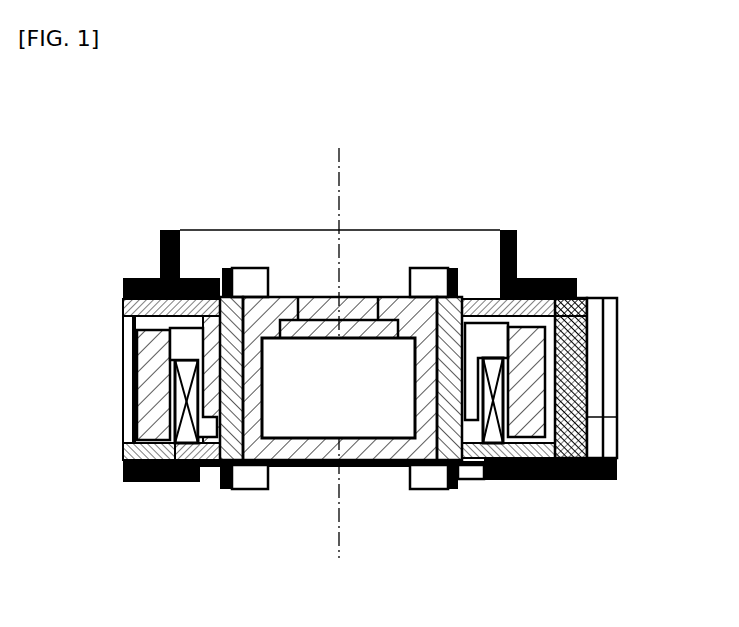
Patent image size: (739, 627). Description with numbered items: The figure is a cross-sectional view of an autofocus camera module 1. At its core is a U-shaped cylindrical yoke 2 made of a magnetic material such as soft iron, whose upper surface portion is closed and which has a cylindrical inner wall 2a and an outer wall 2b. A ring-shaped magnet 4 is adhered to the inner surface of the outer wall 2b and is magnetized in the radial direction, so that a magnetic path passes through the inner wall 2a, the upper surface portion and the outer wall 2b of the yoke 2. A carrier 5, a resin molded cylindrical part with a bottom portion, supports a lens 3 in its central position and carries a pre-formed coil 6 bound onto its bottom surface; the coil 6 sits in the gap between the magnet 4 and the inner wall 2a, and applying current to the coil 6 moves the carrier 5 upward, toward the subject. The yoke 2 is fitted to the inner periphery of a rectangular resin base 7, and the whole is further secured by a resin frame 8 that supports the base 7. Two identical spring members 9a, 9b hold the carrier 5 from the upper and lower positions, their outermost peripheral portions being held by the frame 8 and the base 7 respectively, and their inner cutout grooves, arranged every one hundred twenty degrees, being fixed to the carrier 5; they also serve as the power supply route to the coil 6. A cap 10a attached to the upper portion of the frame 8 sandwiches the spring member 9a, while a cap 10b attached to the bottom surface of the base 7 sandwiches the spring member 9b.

The autofocus camera module 1 is at (462, 218).
The yoke 2 is at (603, 360).
The inner wall 2a is at (153, 278).
The outer wall 2b is at (123, 375).
The lens 3 is at (392, 470).
The magnet 4 is at (553, 272).
The carrier 5 is at (452, 488).
The coil 6 is at (493, 481).
The base 7 is at (603, 437).
The frame 8 is at (603, 312).
The spring member 9a is at (193, 345).
The spring member 9b is at (202, 480).
The cap 10a is at (518, 237).
The cap 10b is at (573, 480).